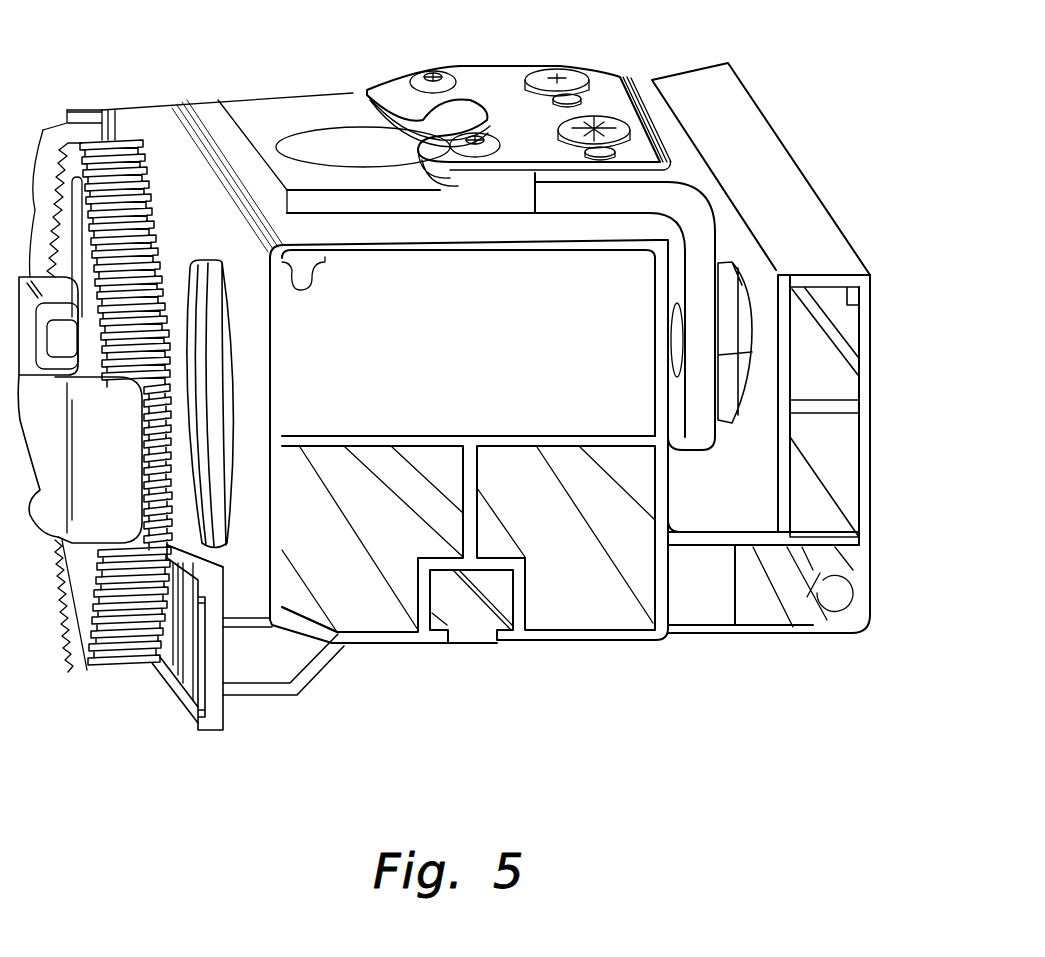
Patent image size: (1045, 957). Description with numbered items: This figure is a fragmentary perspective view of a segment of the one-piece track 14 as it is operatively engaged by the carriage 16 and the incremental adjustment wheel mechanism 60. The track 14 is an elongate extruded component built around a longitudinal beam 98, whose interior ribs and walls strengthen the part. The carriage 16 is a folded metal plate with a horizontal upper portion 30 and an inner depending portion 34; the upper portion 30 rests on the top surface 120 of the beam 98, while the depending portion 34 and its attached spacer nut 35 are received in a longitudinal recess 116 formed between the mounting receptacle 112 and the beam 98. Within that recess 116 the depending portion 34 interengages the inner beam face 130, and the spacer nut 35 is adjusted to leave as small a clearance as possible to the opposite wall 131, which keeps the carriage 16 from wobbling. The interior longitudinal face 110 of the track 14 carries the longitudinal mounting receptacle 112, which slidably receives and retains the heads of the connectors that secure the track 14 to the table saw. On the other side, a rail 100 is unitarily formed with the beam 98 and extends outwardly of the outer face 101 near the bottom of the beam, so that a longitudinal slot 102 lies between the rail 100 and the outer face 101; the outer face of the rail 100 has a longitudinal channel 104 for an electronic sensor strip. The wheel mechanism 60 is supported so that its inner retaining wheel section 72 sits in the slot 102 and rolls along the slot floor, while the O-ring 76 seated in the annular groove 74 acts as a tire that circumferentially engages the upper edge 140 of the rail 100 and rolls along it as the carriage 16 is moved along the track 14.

The track 14 is at (680, 637).
The carriage 16 is at (670, 163).
The horizontal upper portion 30 is at (560, 178).
The inner depending portion 34 is at (718, 228).
The spacer nut 35 is at (752, 285).
The incremental adjustment wheel mechanism 60 is at (127, 673).
The inner wheel section 72 is at (195, 262).
The annular groove 74 is at (183, 257).
The O-ring 76 is at (190, 380).
The longitudinal beam 98 is at (567, 643).
The rail 100 is at (192, 728).
The outer face 101 is at (266, 503).
The longitudinal slot 102 is at (240, 598).
The longitudinal channel 104 is at (213, 733).
The interior longitudinal face 110 is at (870, 463).
The longitudinal mounting receptacle 112 is at (815, 373).
The longitudinal recess 116 is at (730, 508).
The top surface 120 is at (395, 232).
The inner beam face 130 is at (672, 483).
The opposite wall 131 is at (770, 430).
The upper edge 140 is at (203, 570).